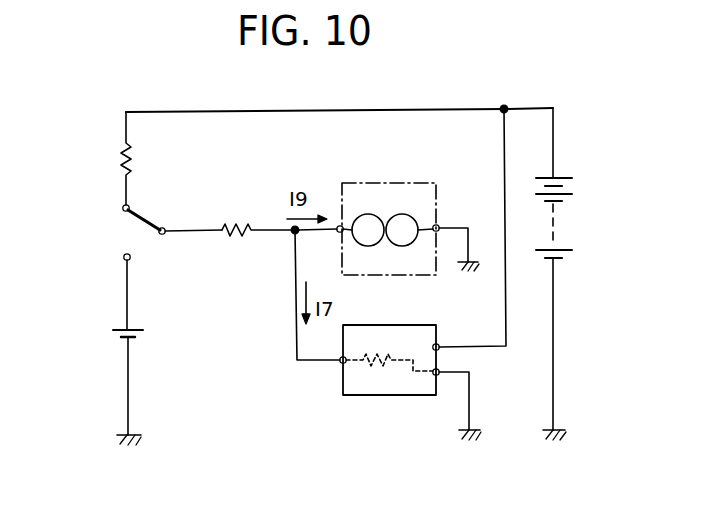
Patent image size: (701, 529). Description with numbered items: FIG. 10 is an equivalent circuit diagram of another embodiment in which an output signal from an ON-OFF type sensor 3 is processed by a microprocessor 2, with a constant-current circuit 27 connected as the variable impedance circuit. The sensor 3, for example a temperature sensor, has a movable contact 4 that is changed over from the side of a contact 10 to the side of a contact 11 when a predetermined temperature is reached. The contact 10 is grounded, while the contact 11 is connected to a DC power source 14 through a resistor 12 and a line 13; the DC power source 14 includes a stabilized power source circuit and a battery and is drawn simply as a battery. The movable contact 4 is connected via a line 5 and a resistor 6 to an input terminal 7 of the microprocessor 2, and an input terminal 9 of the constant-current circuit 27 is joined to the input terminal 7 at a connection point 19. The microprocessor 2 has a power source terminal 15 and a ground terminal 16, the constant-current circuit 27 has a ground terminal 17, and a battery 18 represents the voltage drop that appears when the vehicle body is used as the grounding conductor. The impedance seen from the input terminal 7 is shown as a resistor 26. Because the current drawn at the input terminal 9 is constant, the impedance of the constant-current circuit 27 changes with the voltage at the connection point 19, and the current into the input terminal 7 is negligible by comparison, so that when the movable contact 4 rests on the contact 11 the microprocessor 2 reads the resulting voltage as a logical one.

The microprocessor 2 is at (385, 397).
The sensor 3 is at (145, 214).
The movable contact 4 is at (161, 236).
The line 5 is at (198, 234).
The resistor 6 is at (232, 218).
The input terminal 7 is at (341, 363).
The input terminal 9 is at (338, 225).
The contact 10 is at (123, 257).
The contact 11 is at (122, 206).
The resistor 12 is at (118, 150).
The line 13 is at (242, 110).
The DC power source 14 is at (560, 178).
The power source terminal 15 is at (440, 344).
The ground terminal 16 is at (439, 380).
The ground terminal 17 is at (440, 224).
The battery 18 is at (113, 333).
The connection point 19 is at (287, 238).
The resistor 26 is at (367, 352).
The constant-current circuit 27 is at (410, 182).